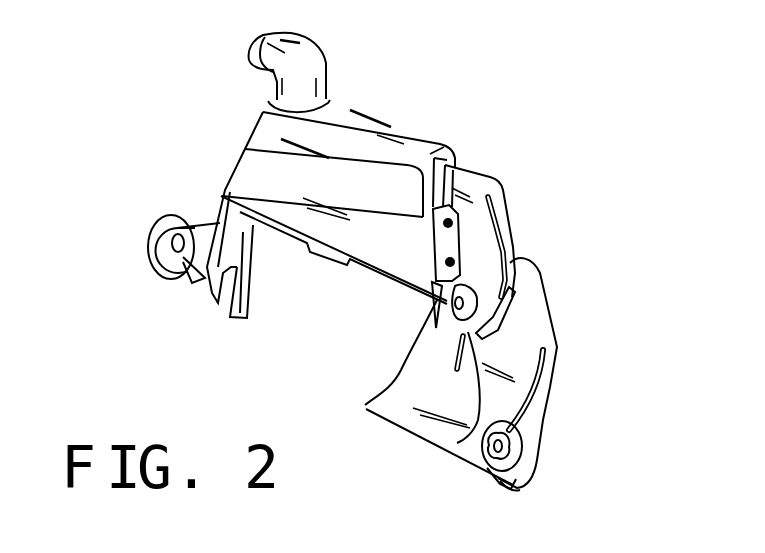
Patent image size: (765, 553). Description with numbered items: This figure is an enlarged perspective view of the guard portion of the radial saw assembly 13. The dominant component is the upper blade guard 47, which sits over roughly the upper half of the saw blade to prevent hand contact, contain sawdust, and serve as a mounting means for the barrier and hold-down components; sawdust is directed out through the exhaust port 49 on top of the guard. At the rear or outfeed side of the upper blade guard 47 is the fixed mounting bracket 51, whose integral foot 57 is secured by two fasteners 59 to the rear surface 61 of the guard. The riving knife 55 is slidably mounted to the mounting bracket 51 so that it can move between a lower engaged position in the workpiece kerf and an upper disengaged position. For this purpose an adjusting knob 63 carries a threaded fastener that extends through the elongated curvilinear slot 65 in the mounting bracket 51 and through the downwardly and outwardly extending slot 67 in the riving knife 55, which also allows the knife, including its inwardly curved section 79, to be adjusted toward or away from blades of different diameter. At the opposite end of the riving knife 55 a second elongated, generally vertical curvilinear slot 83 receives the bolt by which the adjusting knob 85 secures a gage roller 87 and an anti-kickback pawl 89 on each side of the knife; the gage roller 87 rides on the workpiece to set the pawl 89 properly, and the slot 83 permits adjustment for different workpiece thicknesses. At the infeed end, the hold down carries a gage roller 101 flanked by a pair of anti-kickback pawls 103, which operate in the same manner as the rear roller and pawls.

The radial saw assembly 13 is at (531, 154).
The upper blade guard 47 is at (273, 180).
The exhaust port 49 is at (262, 36).
The fixed mounting bracket 51 is at (468, 183).
The riving knife 55 is at (530, 323).
The integral foot 57 is at (445, 278).
The fasteners 59 is at (447, 250).
The rear surface 61 is at (432, 178).
The adjusting knob 63 is at (516, 255).
The elongated curvilinear slot 65 is at (511, 213).
The downwardly and outwardly extending slot 67 is at (467, 405).
The inwardly curved section 79 is at (387, 391).
The second elongated curvilinear slot 83 is at (535, 383).
The adjusting knob 85 is at (514, 433).
The gage roller 87 is at (482, 462).
The anti-kickback pawl 89 is at (514, 490).
The gage roller 101 is at (184, 278).
The anti-kickback pawls 103 is at (157, 262).